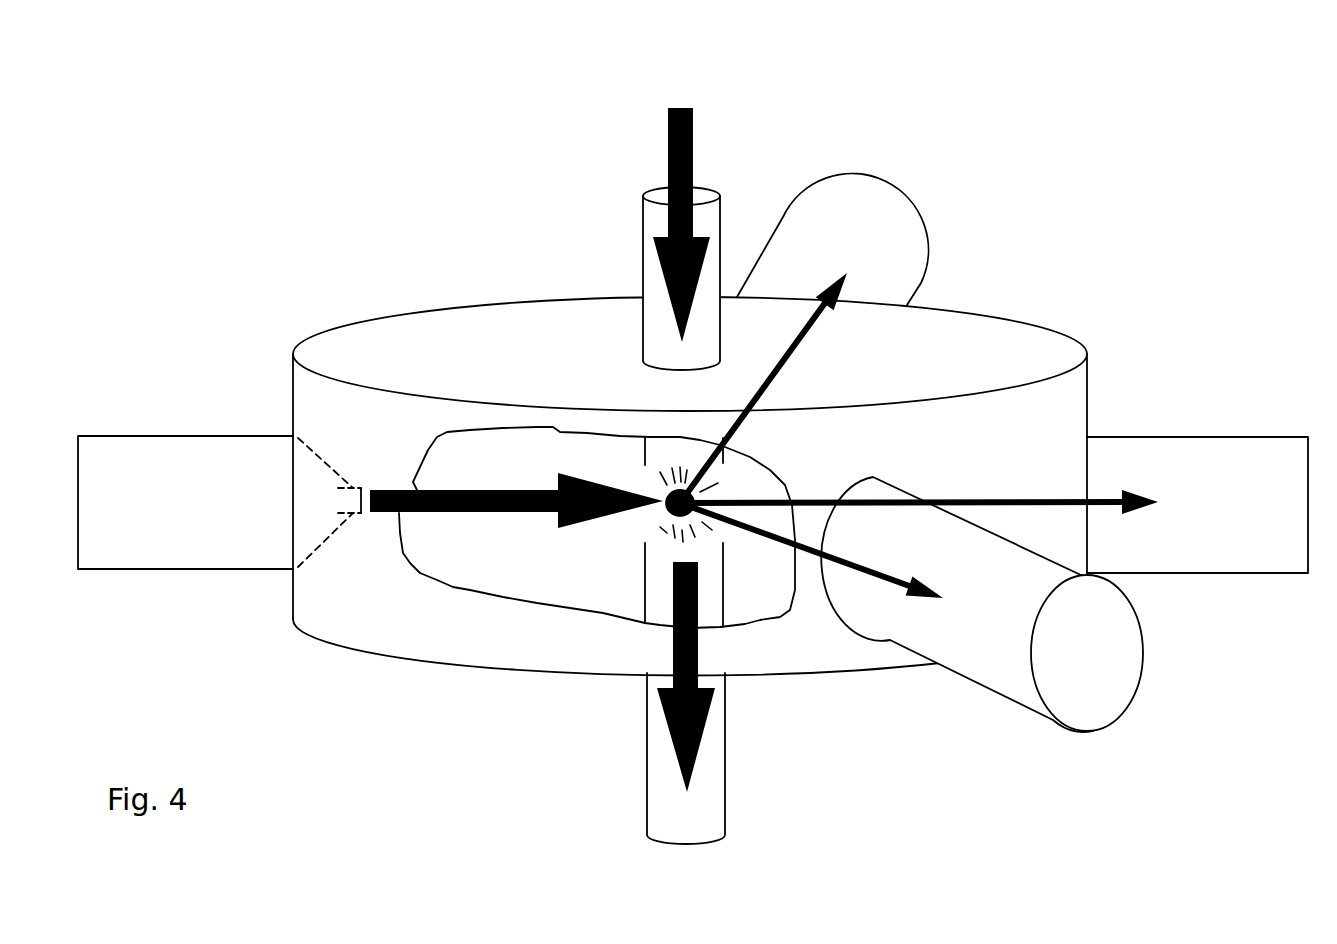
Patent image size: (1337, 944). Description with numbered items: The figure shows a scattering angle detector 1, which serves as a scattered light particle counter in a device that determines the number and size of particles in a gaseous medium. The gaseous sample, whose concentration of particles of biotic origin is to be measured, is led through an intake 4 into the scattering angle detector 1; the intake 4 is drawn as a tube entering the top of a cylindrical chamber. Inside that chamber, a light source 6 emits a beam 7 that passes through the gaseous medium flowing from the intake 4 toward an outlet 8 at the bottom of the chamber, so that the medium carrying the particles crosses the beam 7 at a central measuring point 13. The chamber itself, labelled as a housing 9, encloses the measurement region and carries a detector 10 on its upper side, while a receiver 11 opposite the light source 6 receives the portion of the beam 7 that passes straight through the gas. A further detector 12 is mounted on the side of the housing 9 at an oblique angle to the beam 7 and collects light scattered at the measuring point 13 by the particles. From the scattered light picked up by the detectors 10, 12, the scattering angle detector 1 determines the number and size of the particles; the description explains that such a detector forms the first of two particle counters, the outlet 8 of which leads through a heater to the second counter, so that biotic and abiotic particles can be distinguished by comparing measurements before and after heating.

The scattering angle detector 1 is at (693, 463).
The intake 4 is at (716, 215).
The laser light source 6 is at (260, 562).
The laser beam 7 is at (470, 512).
The gas outlet 8 is at (713, 822).
The measuring chamber 9 is at (1045, 340).
The detector 10 is at (880, 233).
The light receiver 11 is at (1222, 565).
The spectrometer 12 is at (1013, 672).
The measuring point 13 is at (702, 498).